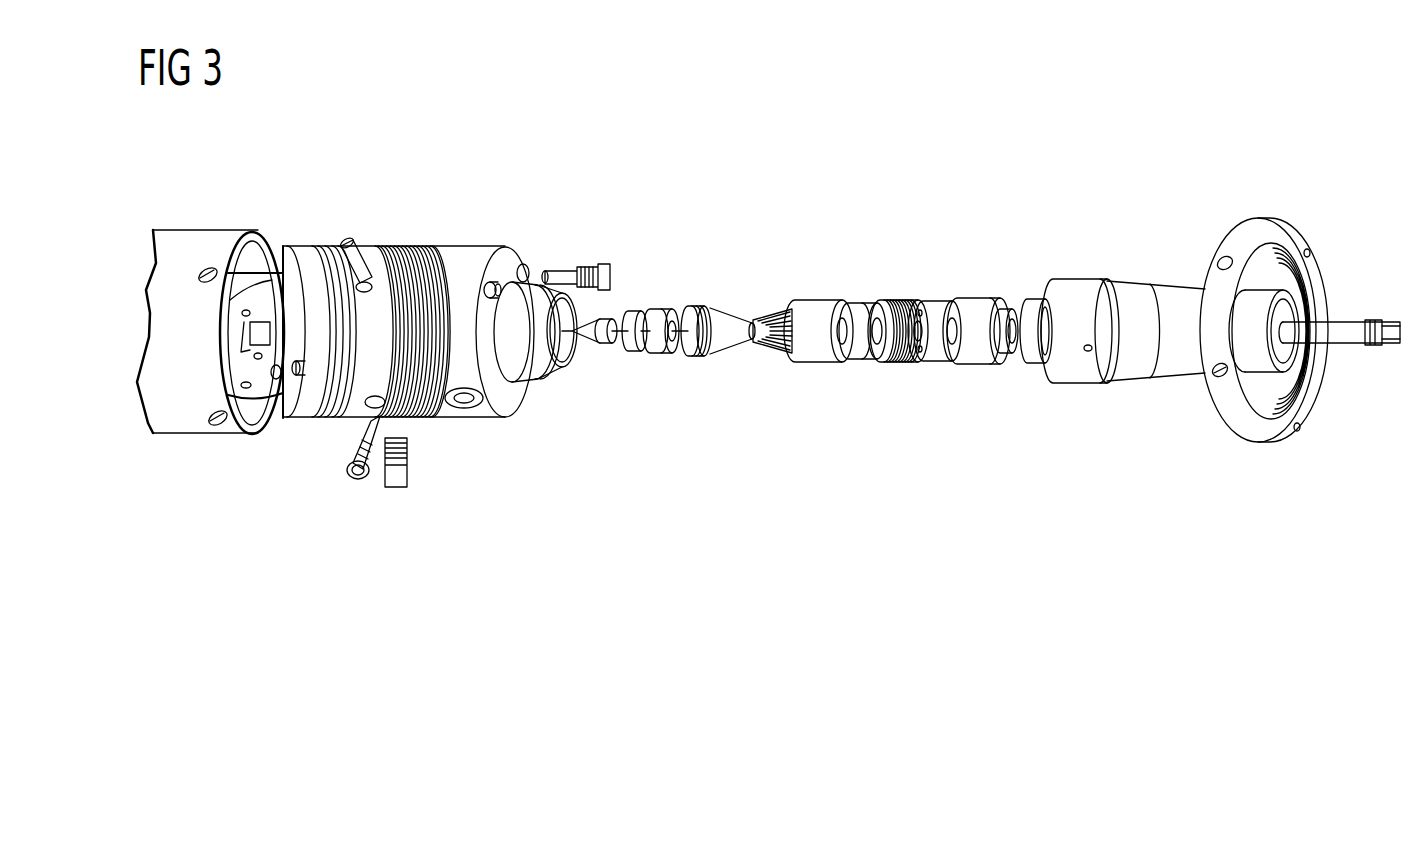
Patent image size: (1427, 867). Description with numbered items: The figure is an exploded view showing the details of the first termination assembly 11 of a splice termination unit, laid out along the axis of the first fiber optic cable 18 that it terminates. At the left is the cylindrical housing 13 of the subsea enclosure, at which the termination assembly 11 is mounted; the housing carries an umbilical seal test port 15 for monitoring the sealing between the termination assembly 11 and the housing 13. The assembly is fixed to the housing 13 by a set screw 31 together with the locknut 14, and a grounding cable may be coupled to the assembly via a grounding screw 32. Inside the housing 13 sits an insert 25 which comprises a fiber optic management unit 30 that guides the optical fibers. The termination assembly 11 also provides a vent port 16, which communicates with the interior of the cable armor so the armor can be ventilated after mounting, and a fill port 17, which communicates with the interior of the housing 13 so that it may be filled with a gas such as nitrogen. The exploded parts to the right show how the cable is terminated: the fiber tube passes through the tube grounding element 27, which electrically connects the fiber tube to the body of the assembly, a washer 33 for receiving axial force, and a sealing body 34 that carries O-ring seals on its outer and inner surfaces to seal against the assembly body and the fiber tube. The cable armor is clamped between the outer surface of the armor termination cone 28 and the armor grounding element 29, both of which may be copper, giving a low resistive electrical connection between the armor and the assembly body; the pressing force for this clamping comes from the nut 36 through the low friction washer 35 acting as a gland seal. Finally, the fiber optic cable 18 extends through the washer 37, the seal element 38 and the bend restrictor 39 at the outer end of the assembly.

The first termination assembly 11 is at (849, 111).
The cylindrical housing 13 is at (203, 214).
The locknut 14 is at (1278, 201).
The umbilical seal test port 15 is at (360, 500).
The vent port 16 is at (475, 435).
The fill port 17 is at (590, 243).
The first fiber optic cable 18 is at (1364, 304).
The insert 25 is at (293, 420).
The tube grounding element 27 is at (603, 370).
The armor termination cone 28 is at (709, 276).
The armor grounding element 29 is at (824, 278).
The fiber optic management unit 30 is at (300, 229).
The set screw 31 is at (360, 219).
The grounding screw 32 is at (503, 267).
The washer 33 is at (635, 290).
The sealing body 34 is at (666, 291).
The low friction washer (gland seal) 35 is at (868, 278).
The nut 36 is at (904, 278).
The washer 37 is at (943, 278).
The seal element 38 is at (991, 278).
The bend restrictor 39 is at (1146, 264).